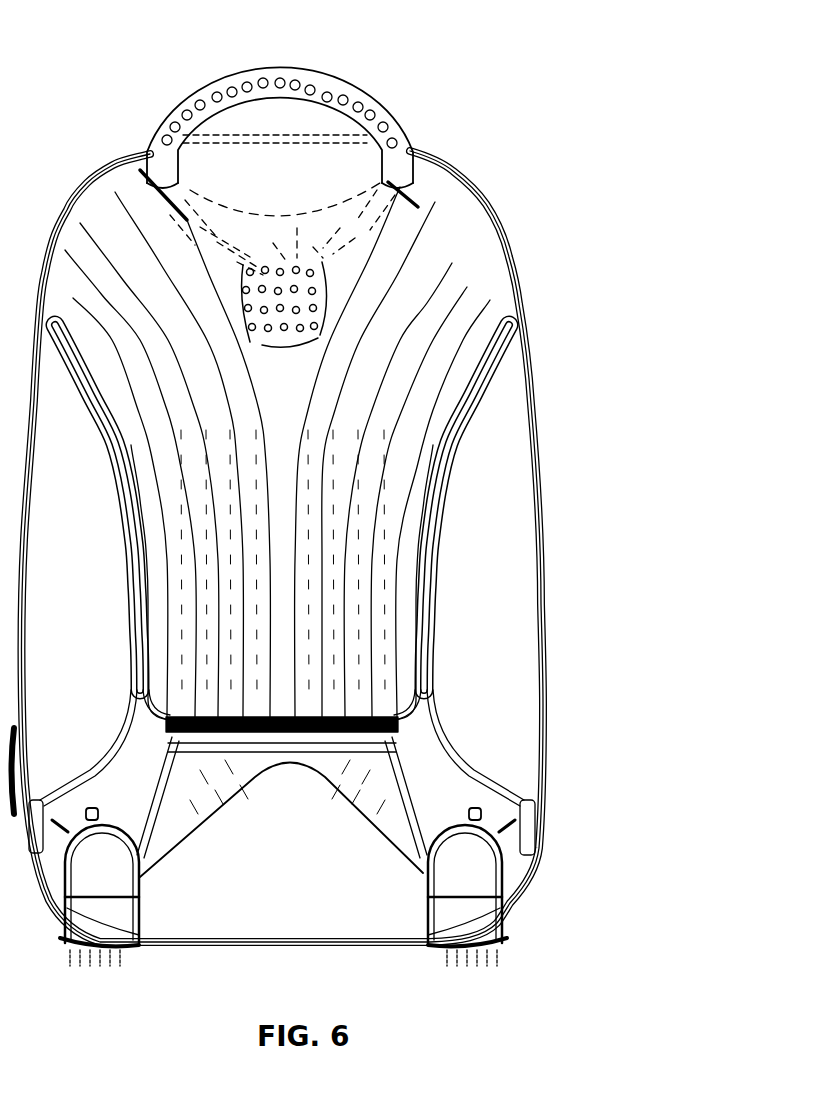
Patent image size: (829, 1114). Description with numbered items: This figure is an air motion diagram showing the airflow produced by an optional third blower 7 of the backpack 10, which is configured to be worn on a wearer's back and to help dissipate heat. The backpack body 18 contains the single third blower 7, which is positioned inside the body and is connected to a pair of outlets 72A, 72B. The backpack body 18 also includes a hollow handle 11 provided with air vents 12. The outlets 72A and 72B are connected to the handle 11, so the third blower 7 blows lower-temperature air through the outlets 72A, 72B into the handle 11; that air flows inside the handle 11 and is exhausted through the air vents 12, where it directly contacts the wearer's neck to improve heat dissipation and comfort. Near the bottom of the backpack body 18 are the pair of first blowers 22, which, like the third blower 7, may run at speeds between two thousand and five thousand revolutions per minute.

The backpack 10 is at (618, 106).
The backpack body 18 is at (523, 304).
The air vents 12 is at (387, 110).
The hollow handle 11 is at (423, 150).
The third blower 7 is at (320, 293).
The outlet 72A is at (167, 182).
The outlet 72B is at (388, 180).
The first blowers 22 is at (423, 873).